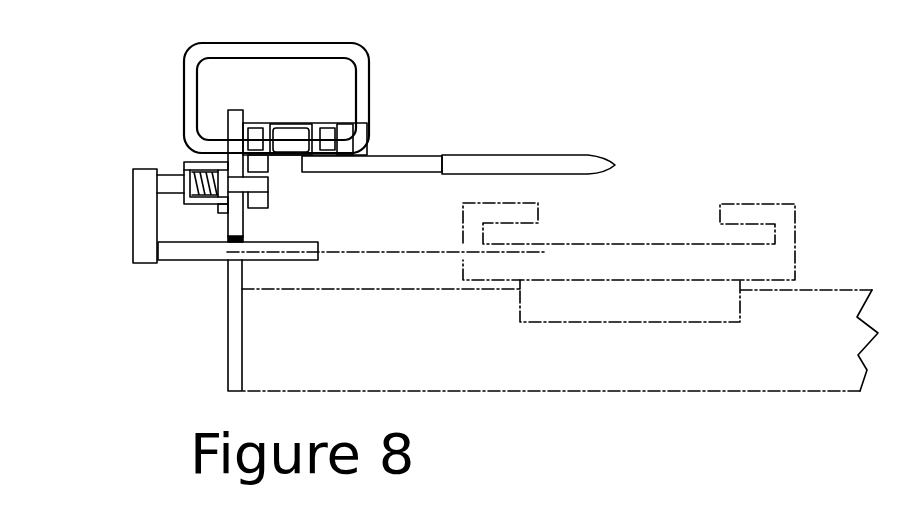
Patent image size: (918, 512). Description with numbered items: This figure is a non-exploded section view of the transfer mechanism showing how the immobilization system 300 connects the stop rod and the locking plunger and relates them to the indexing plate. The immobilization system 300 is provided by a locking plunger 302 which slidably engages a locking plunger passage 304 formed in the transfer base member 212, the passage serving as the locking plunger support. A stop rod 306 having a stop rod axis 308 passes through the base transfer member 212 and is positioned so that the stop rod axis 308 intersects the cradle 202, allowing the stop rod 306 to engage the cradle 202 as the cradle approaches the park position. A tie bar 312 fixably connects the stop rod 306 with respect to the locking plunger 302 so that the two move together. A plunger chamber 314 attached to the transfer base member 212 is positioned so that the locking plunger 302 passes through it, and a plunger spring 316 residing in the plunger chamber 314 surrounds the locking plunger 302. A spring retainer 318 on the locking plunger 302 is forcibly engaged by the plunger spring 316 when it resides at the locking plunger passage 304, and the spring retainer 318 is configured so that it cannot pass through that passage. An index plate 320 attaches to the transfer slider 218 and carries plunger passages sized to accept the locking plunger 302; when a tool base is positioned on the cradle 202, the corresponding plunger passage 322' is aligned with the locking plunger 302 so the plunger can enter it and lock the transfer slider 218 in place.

The immobilization system 300 is at (103, 87).
The locking plunger 302 is at (260, 183).
The locking plunger passage 304 is at (187, 169).
The stop rod 306 is at (199, 252).
The stop rod axis 308 is at (368, 250).
The tie bar 312 is at (143, 225).
The plunger chamber 314 is at (185, 198).
The plunger spring 316 is at (192, 179).
The spring retainer 318 is at (218, 203).
The index plate 320 is at (257, 204).
The plunger passage 322' is at (458, 147).
The transfer slider 218 is at (282, 122).
The cradle 202 is at (752, 204).
The transfer base member 212 is at (233, 344).